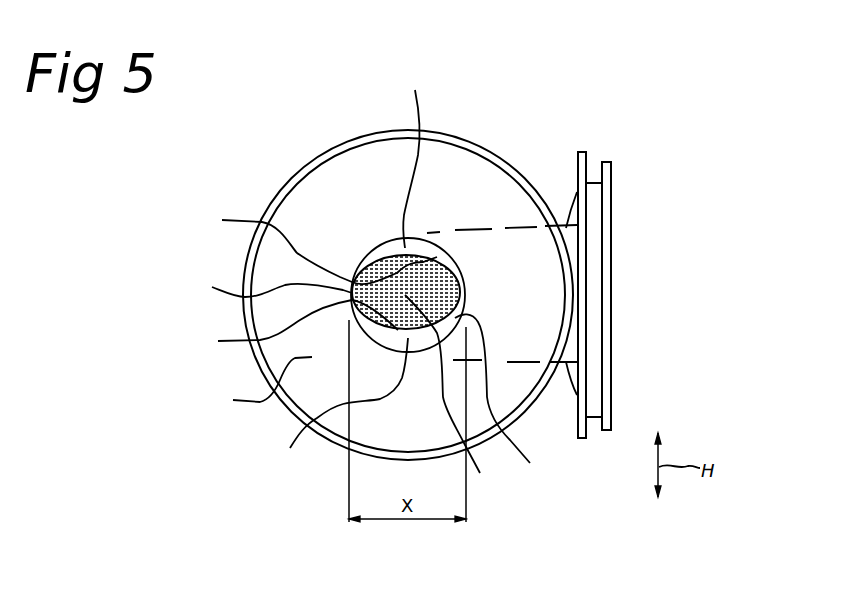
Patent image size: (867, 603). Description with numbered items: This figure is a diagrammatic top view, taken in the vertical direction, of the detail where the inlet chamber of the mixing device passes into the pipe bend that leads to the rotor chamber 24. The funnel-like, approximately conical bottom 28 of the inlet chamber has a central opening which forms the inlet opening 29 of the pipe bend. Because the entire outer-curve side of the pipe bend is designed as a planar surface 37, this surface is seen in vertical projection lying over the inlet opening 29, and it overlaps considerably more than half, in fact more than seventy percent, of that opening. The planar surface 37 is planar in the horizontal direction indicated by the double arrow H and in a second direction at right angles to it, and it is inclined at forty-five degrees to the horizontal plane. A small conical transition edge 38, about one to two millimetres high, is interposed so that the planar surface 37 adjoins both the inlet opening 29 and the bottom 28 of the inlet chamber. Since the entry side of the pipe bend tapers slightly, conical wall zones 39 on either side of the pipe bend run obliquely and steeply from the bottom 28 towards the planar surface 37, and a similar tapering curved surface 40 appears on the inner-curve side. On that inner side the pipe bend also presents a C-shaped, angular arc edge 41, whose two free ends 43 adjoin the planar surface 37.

The rotor chamber 24 is at (513, 310).
The bottom of the inlet chamber 28 is at (257, 385).
The inlet opening 29 is at (440, 247).
The planar surface 37 is at (457, 398).
The conical transition edge 38 is at (266, 288).
The conical wall zones 39 is at (344, 271).
The tapering curved surface 40 is at (504, 395).
The arc edge 41 is at (463, 280).
The free ends 43 is at (311, 283).